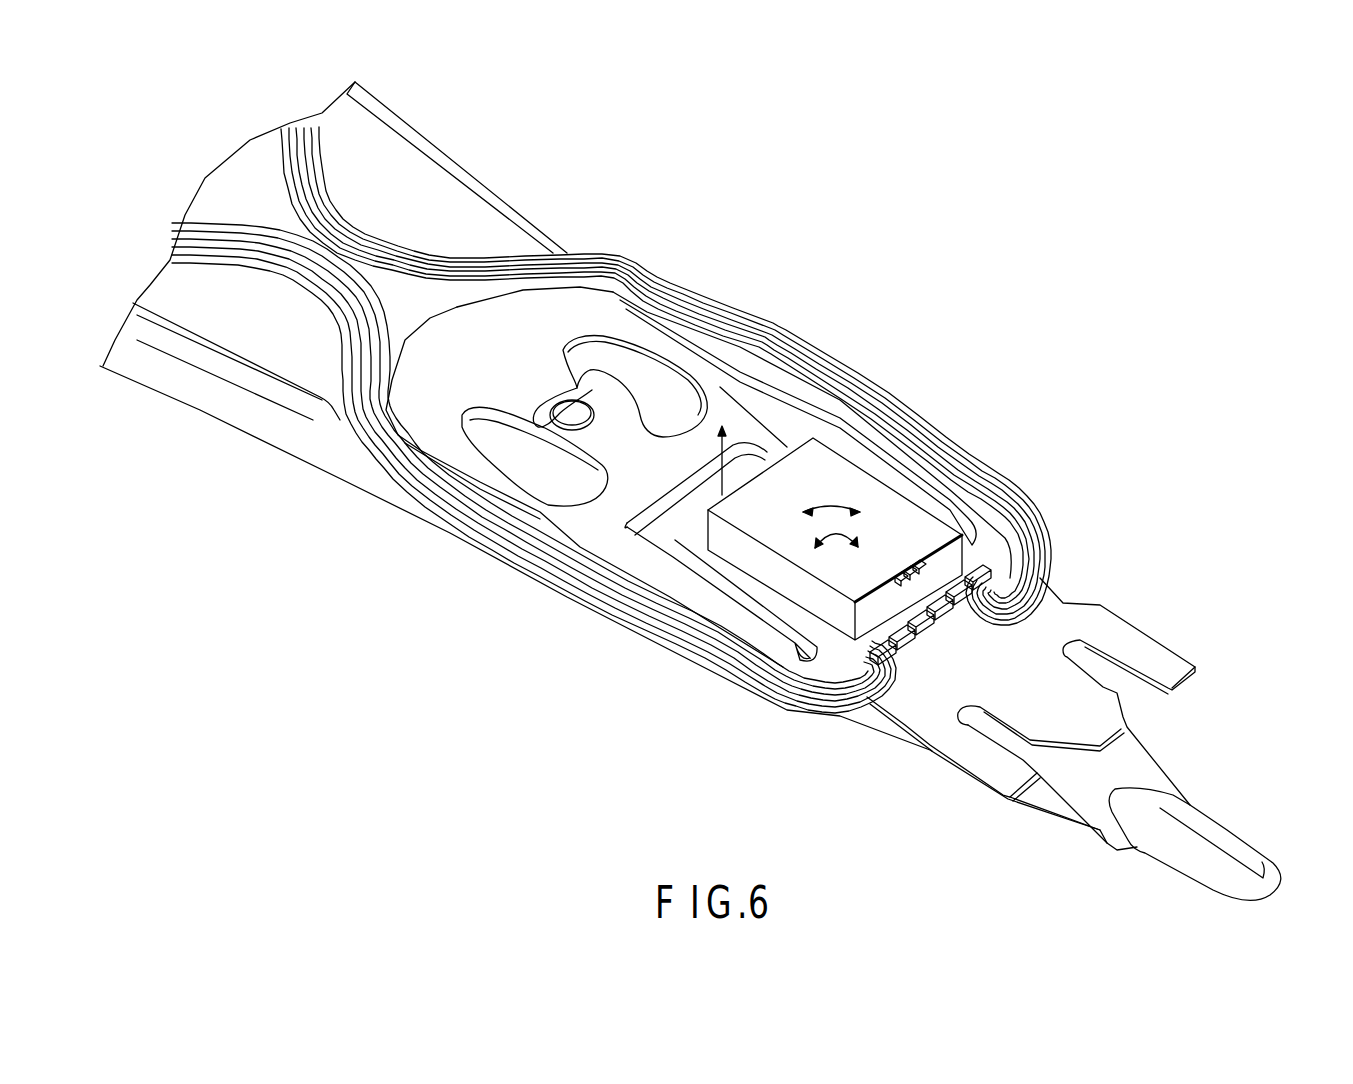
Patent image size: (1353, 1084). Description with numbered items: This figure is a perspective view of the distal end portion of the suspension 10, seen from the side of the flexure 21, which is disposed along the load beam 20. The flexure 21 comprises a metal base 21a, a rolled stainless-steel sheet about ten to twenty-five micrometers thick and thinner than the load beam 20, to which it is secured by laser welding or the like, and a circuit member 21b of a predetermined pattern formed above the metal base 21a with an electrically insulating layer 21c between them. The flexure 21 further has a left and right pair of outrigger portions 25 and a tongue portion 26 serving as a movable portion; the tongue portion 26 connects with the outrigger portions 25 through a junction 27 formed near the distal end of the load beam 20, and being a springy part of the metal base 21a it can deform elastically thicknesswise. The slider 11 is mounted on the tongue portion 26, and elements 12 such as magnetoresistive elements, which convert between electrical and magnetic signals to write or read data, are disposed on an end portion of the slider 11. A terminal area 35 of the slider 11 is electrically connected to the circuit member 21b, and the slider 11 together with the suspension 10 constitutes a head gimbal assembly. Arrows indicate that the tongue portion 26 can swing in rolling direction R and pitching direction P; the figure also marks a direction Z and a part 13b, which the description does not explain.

The suspension 10 is at (781, 190).
The slider 11 is at (920, 520).
The elements 12 is at (955, 572).
The tail portion of flexure 13b is at (1270, 880).
The load beam 20 is at (458, 152).
The flexure 21 is at (510, 255).
The metal base 21a is at (580, 316).
The circuit member 21b is at (793, 333).
The electrically insulating layer 21c is at (423, 312).
The outrigger portions 25 is at (870, 430).
The tongue portion 26 is at (604, 613).
The junction 27 is at (838, 640).
The terminal area 35 is at (985, 595).
The Z direction Z is at (763, 428).
The rolling direction R is at (850, 507).
The pitching direction P is at (858, 514).